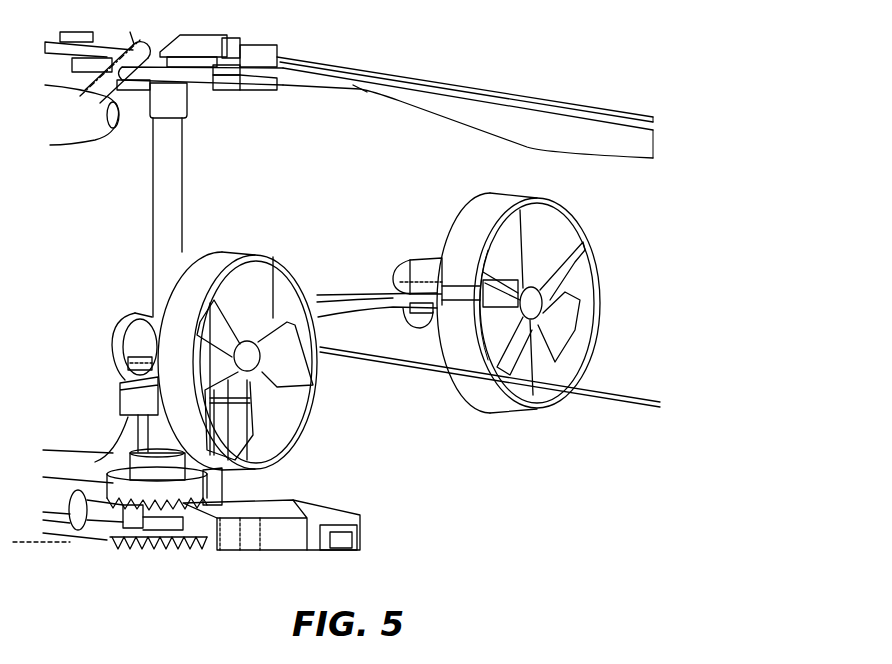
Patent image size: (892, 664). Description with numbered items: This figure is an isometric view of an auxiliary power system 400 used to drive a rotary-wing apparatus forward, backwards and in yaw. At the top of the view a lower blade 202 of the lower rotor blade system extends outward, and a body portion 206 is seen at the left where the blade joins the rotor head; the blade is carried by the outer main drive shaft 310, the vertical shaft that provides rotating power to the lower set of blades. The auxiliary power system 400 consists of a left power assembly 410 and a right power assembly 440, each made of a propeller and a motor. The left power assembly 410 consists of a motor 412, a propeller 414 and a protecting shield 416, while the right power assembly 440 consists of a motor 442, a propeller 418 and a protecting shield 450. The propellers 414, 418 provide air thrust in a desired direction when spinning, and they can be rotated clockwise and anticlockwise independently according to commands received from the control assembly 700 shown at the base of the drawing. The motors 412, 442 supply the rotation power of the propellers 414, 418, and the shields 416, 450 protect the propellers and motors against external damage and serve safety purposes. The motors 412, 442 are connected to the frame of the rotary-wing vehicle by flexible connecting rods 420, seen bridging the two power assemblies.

The lower blade 202 is at (535, 95).
The fuselage body 206 is at (72, 140).
The outer main drive shaft 310 is at (160, 223).
The auxiliary power system 400 is at (309, 330).
The left power assembly 410 is at (253, 348).
The motor 412 is at (120, 333).
The propeller 414 is at (303, 377).
The protecting shield 416 is at (287, 427).
The propeller 418 is at (577, 263).
The flexible connecting rods 420 is at (330, 295).
The right power assembly 440 is at (542, 292).
The motor 442 is at (413, 253).
The protecting shield 450 is at (577, 325).
The control assembly 700 is at (295, 502).